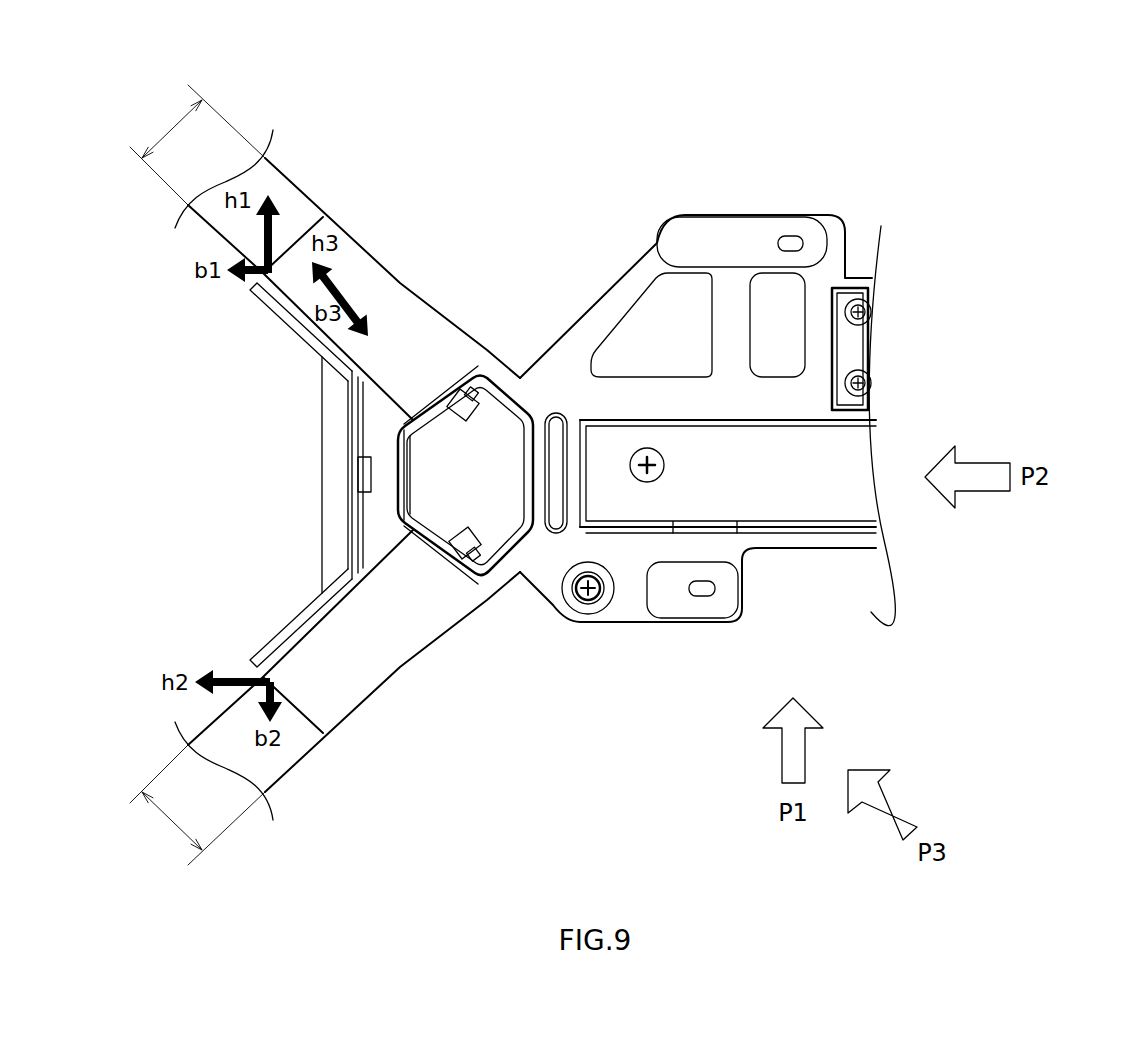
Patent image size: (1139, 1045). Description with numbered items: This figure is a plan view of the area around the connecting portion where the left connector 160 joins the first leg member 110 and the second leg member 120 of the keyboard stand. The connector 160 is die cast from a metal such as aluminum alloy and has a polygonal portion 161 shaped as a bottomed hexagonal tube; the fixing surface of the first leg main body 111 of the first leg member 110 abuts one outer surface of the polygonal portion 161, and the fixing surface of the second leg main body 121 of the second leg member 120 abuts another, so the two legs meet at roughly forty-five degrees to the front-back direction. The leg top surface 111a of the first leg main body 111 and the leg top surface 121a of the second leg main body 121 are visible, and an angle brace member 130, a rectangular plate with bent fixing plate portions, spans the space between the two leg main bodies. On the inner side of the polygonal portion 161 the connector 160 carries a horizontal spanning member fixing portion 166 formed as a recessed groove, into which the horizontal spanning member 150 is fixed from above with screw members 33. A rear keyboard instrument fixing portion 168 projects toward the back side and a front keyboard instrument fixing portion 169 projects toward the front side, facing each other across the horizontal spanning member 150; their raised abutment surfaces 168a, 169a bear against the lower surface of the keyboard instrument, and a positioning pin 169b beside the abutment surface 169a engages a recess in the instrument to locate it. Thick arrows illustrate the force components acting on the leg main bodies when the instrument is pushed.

The connector 160 is at (646, 367).
The second leg member 120 is at (325, 252).
The second leg main body 121 is at (302, 193).
The rear keyboard instrument fixing portion 168 is at (742, 190).
The abutment surface 168a is at (750, 243).
The screw member 33 is at (645, 457).
The horizontal spanning member 150 is at (810, 450).
The polygonal portion 161 is at (503, 520).
The positioning pin 169b is at (594, 605).
The front keyboard instrument fixing portion 169 is at (740, 631).
The abutment surface 169a is at (700, 607).
The horizontal spanning member fixing portion 166 is at (783, 536).
The leg top surface 121a is at (358, 342).
The angle brace member 130 is at (300, 475).
The leg top surface 111a is at (370, 620).
The first leg main body 111 is at (260, 765).
The first leg member 110 is at (325, 698).